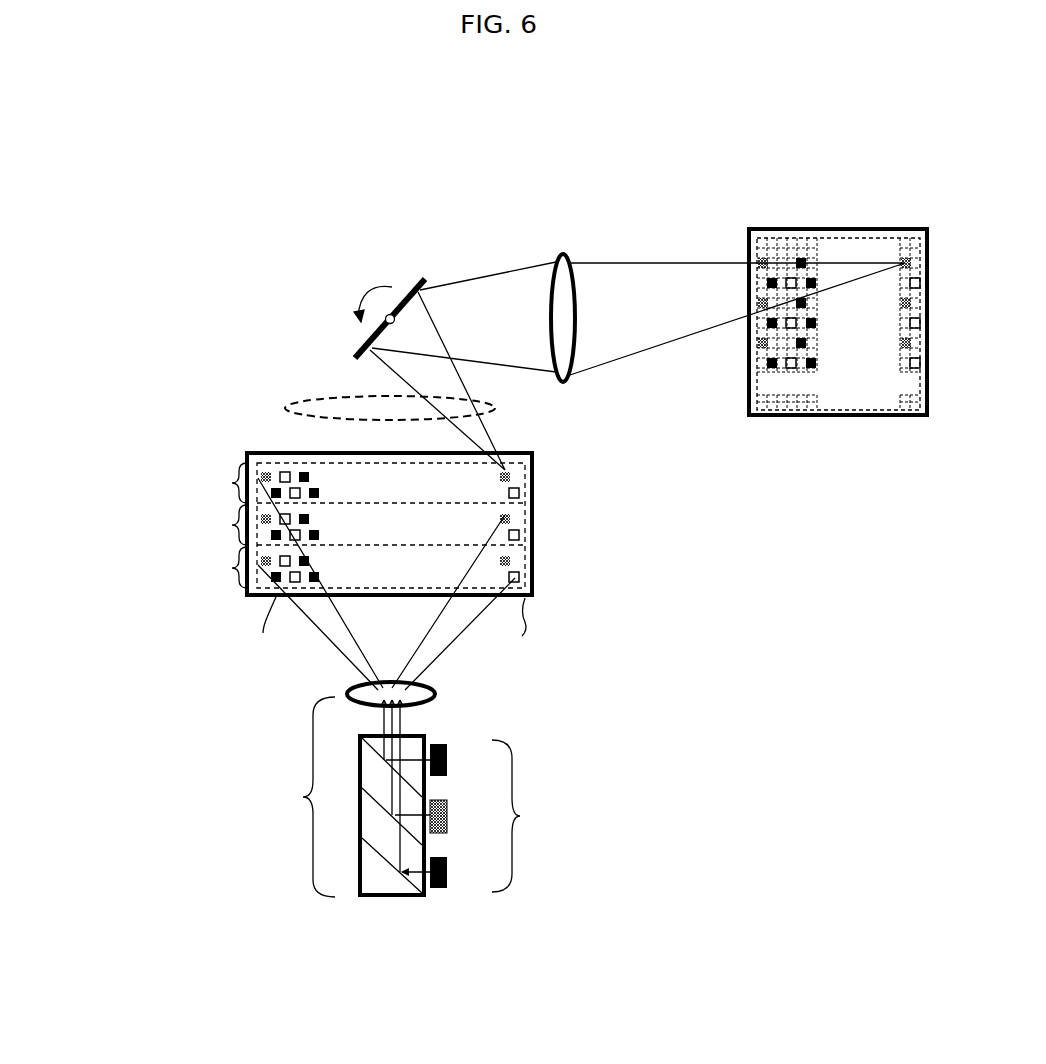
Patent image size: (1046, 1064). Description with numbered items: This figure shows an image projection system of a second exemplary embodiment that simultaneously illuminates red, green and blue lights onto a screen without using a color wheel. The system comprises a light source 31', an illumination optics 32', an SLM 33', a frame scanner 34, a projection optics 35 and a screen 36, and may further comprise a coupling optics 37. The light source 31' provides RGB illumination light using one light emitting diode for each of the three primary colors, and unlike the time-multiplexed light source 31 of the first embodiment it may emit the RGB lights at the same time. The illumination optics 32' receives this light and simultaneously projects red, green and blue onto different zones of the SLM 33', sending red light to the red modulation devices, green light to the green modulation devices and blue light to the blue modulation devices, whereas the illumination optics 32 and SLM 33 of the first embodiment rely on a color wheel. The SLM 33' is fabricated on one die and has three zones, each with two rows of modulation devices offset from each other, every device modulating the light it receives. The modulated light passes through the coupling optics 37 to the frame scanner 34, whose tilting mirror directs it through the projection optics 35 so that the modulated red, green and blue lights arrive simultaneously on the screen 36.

The light source 31' is at (620, 816).
The light source 31 is at (620, 816).
The illumination optics 32' is at (261, 789).
The illumination optics 32 is at (261, 789).
The spatial light modulator (SLM) 33' is at (383, 567).
The spatial light modulator (SLM) 33 is at (383, 567).
The frame scanner 34 is at (360, 290).
The projection optics 35 is at (562, 255).
The screen 36 is at (845, 228).
The coupling optics 37 is at (290, 408).